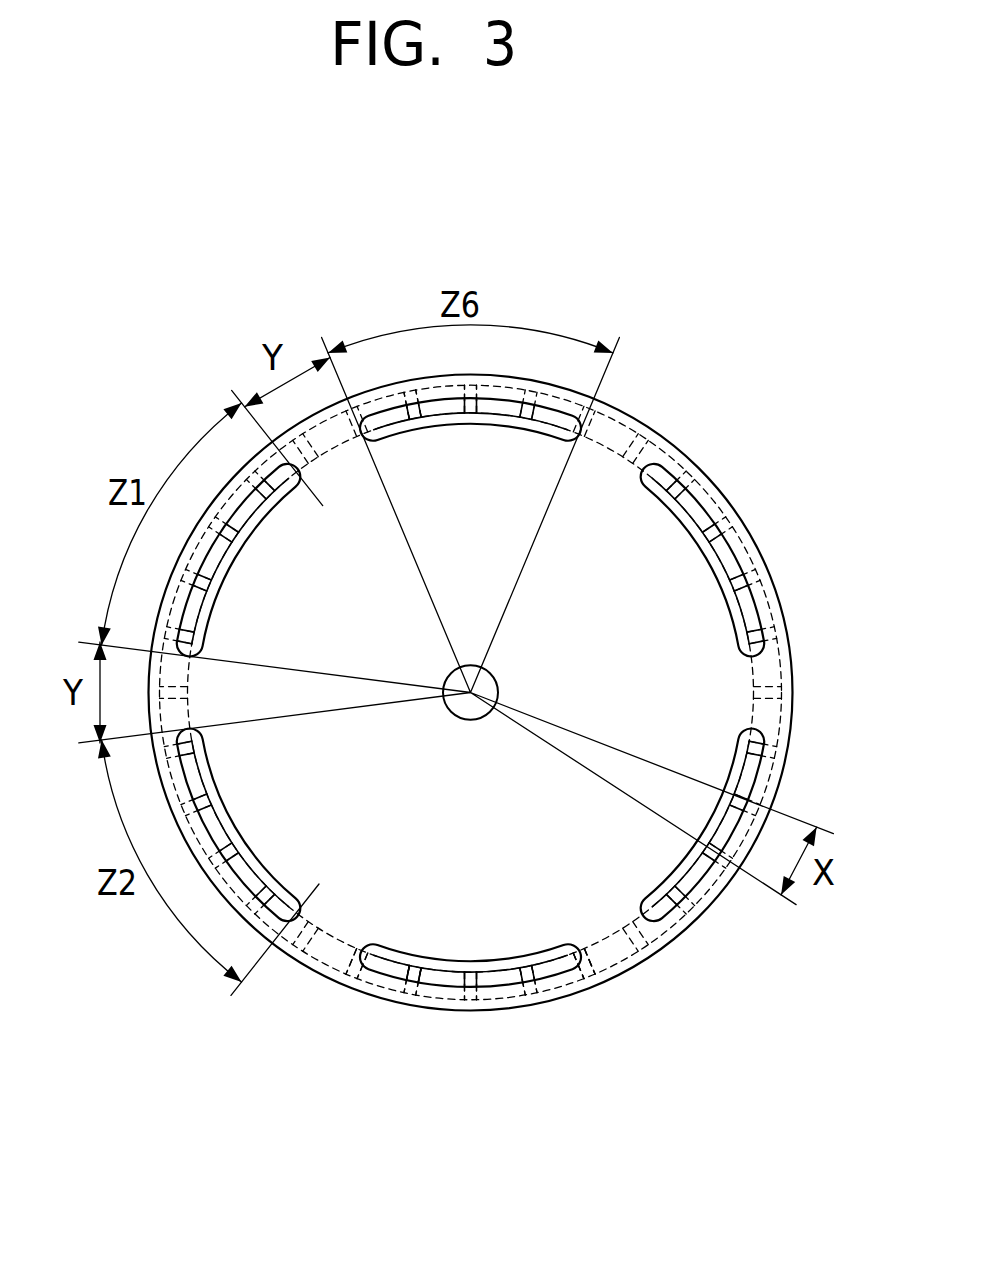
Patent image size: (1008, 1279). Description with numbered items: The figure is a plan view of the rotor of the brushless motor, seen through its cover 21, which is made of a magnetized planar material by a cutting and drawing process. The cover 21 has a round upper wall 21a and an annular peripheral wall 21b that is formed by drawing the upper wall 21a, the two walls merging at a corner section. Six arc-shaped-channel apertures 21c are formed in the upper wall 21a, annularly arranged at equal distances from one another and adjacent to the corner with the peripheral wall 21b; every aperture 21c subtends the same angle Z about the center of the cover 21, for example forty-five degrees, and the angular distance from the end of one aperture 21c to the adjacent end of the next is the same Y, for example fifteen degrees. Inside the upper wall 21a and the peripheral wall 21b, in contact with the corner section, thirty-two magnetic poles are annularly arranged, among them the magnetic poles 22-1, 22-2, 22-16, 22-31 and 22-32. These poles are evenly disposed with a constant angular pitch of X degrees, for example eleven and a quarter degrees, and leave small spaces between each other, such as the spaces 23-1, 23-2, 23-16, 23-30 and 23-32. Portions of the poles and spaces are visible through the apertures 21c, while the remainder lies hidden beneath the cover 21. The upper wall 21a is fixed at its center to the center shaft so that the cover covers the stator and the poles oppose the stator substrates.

The cover 21 is at (673, 432).
The upper wall 21a is at (723, 697).
The peripheral wall 21b is at (783, 612).
The arc-shaped-channel aperture 21c is at (228, 564).
The magnetic pole 22-1 is at (445, 982).
The magnetic pole 22-2 is at (384, 968).
The magnetic pole 22-16 is at (433, 410).
The magnetic pole 22-31 is at (563, 987).
The magnetic pole 22-32 is at (502, 982).
The space 23-1 is at (415, 967).
The space 23-2 is at (362, 958).
The space 23-16 is at (472, 412).
The space 23-30 is at (598, 958).
The space 23-32 is at (475, 977).